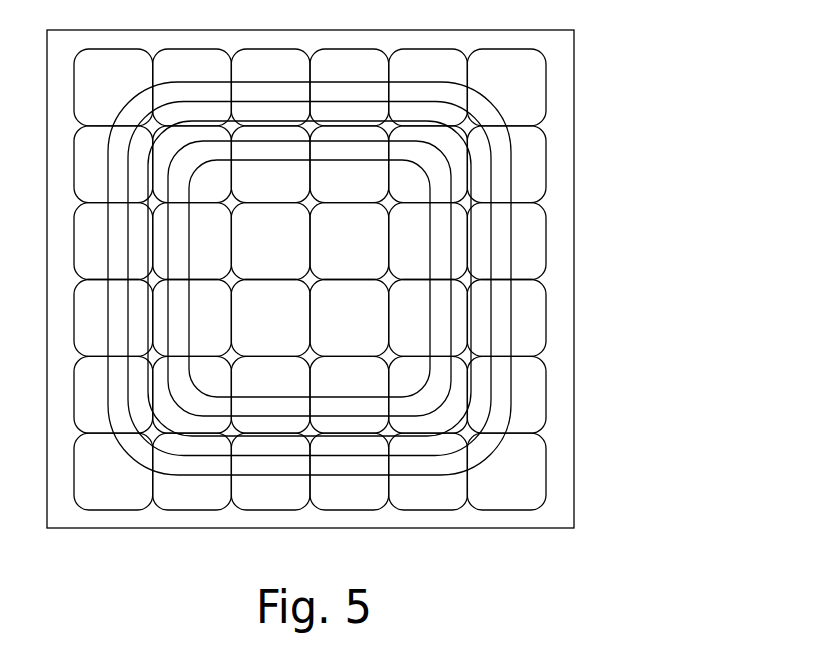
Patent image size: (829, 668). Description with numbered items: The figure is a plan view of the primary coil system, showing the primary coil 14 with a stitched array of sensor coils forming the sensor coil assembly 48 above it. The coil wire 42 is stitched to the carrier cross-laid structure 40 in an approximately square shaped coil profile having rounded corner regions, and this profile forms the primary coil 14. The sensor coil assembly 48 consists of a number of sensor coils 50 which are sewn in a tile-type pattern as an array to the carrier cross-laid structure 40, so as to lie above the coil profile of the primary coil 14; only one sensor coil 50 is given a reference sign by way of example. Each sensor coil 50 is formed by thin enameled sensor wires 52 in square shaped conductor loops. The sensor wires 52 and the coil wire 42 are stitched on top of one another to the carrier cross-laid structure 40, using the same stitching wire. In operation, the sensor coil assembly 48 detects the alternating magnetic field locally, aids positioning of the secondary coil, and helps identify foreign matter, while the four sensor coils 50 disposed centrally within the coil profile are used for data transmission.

The primary coil 14 is at (387, 279).
The sensor coil assembly 48 is at (613, 98).
The carrier cross-laid structure 40 is at (395, 279).
The coil wire 42 is at (496, 381).
The sensor coil 50 is at (395, 279).
The sensor wire 52 is at (556, 472).